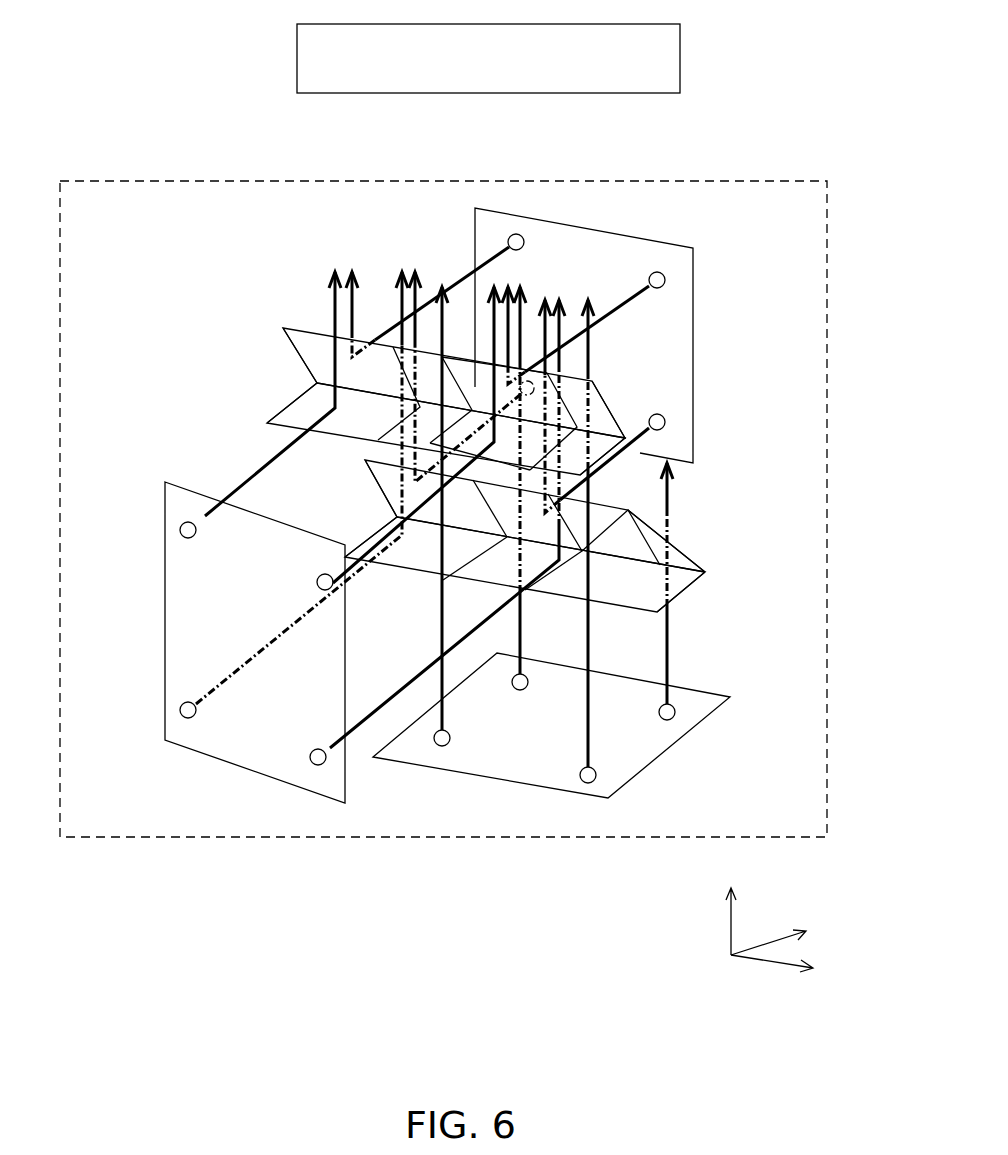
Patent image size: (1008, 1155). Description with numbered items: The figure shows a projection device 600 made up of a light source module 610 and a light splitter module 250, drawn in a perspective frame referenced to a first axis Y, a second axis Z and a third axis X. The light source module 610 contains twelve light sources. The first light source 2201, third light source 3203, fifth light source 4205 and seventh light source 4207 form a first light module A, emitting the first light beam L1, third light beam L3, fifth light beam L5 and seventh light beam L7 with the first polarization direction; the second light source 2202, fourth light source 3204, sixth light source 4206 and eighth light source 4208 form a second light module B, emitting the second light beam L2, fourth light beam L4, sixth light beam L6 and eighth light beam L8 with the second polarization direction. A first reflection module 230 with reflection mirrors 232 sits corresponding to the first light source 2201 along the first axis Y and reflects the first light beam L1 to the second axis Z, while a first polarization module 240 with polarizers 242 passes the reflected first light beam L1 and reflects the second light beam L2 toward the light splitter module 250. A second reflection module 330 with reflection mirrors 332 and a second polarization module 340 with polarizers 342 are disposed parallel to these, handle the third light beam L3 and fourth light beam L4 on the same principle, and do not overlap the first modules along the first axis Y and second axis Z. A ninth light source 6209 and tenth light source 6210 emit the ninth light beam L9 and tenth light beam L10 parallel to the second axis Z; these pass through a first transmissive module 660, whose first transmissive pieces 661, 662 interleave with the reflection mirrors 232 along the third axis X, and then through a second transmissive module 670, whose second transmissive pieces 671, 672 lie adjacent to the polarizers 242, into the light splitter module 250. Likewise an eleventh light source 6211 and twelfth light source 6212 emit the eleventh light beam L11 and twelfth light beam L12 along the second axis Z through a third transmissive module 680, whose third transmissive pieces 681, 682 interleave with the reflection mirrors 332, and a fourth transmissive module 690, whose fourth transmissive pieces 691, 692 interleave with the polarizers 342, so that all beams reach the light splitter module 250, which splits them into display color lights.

The projection device 600 is at (748, 112).
The light splitter module 250 is at (297, 60).
The light source module 610 is at (380, 838).
The first polarization module 240 is at (290, 318).
The polarizer 242 is at (312, 350).
The first reflection module 230 is at (247, 420).
The reflection mirror 232 is at (283, 412).
The second polarization module 340 is at (305, 485).
The polarizer 342 is at (370, 488).
The second reflection module 330 is at (598, 595).
The reflection mirror 332 is at (428, 560).
The first transmissive module 660 is at (667, 390).
The first transmissive piece 661 is at (362, 446).
The first transmissive piece 662 is at (596, 432).
The second transmissive module 670 is at (640, 345).
The second transmissive piece 671 is at (432, 367).
The second transmissive piece 672 is at (598, 408).
The third transmissive module 680 is at (685, 610).
The third transmissive piece 681 is at (493, 570).
The third transmissive piece 682 is at (683, 588).
The fourth transmissive module 690 is at (700, 528).
The fourth transmissive piece 691 is at (500, 513).
The fourth transmissive piece 692 is at (678, 548).
The first light source 2201 is at (180, 531).
The second light source 2202 is at (508, 244).
The third light source 3203 is at (180, 712).
The fourth light source 3204 is at (530, 380).
The fifth light source 4205 is at (317, 582).
The sixth light source 4206 is at (666, 280).
The seventh light source 4207 is at (318, 766).
The eighth light source 4208 is at (666, 422).
The ninth light source 6209 is at (442, 747).
The tenth light source 6210 is at (588, 784).
The eleventh light source 6211 is at (520, 691).
The twelfth light source 6212 is at (667, 721).
The first light module A is at (183, 624).
The second light module B is at (603, 246).
The first light beam L1 is at (273, 407).
The second light beam L2 is at (434, 302).
The third light beam L3 is at (302, 498).
The fourth light beam L4 is at (464, 368).
The fifth light beam L5 is at (404, 435).
The sixth light beam L6 is at (575, 326).
The seventh light beam L7 is at (435, 524).
The eighth light beam L8 is at (606, 406).
The ninth light beam L9 is at (457, 511).
The tenth light beam L10 is at (610, 536).
The eleventh light beam L11 is at (542, 494).
The twelfth light beam L12 is at (640, 589).
The third axis X is at (788, 975).
The first axis Y is at (782, 932).
The second axis Z is at (731, 903).